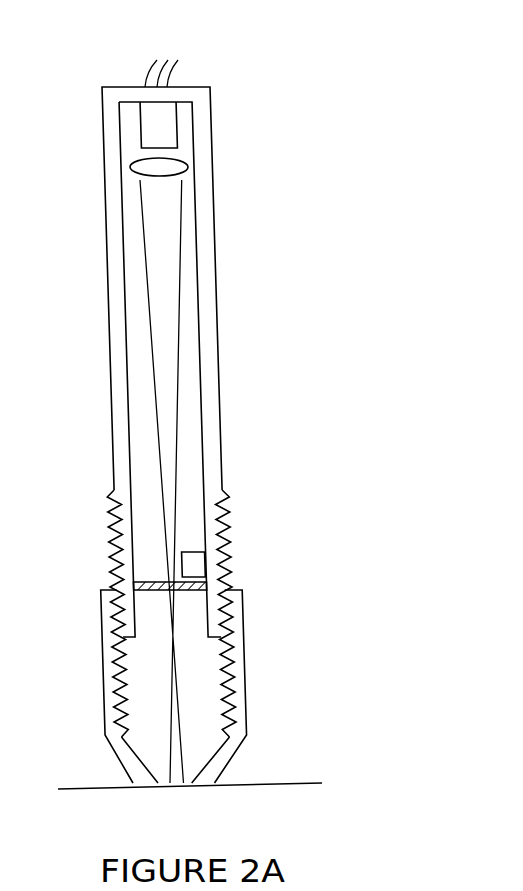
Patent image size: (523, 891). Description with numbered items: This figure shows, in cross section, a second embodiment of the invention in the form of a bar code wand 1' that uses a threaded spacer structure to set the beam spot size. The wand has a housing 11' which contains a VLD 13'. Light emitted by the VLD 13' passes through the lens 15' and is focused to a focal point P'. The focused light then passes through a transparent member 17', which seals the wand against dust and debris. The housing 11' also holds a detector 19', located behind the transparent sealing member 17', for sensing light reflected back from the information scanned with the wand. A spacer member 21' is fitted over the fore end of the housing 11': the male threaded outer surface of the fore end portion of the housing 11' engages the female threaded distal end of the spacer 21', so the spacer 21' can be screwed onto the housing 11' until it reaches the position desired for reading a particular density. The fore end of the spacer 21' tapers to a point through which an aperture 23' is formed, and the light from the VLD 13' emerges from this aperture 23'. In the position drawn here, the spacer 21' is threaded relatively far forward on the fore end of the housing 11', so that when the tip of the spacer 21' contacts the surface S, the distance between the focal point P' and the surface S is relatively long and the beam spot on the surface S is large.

The bar code wand 1' is at (154, 421).
The housing 11' is at (189, 398).
The VLD 13' is at (117, 120).
The lens 15' is at (198, 462).
The transparent member 17' is at (209, 589).
The detector 19' is at (232, 541).
The spacer member 21' is at (145, 686).
The aperture 23' is at (206, 760).
The focal point P' is at (230, 655).
The surface S is at (90, 785).